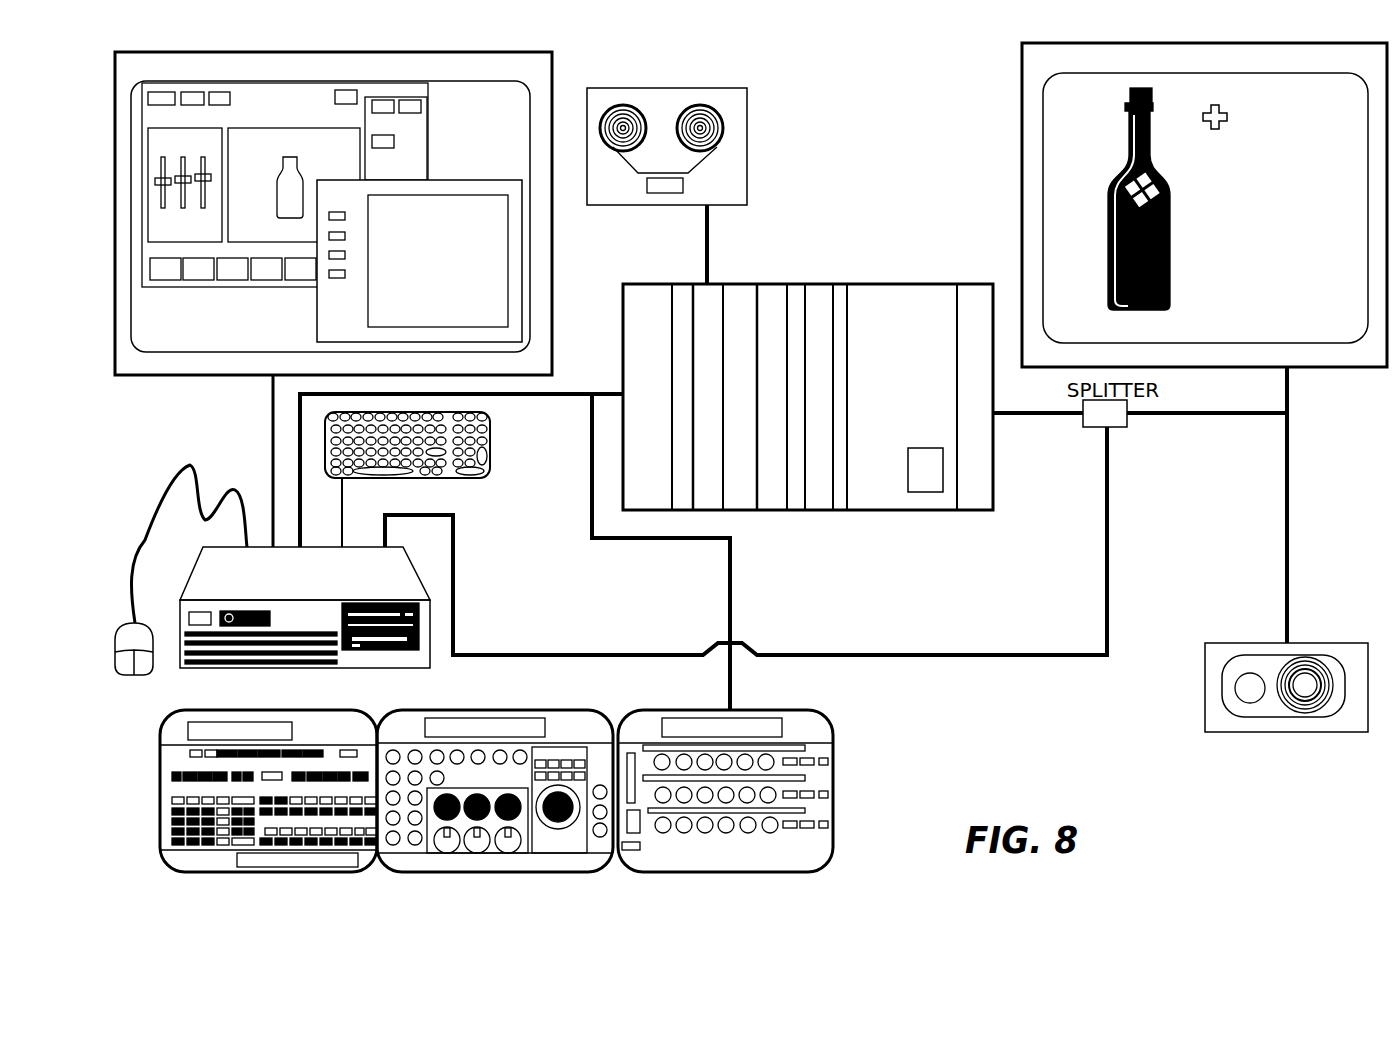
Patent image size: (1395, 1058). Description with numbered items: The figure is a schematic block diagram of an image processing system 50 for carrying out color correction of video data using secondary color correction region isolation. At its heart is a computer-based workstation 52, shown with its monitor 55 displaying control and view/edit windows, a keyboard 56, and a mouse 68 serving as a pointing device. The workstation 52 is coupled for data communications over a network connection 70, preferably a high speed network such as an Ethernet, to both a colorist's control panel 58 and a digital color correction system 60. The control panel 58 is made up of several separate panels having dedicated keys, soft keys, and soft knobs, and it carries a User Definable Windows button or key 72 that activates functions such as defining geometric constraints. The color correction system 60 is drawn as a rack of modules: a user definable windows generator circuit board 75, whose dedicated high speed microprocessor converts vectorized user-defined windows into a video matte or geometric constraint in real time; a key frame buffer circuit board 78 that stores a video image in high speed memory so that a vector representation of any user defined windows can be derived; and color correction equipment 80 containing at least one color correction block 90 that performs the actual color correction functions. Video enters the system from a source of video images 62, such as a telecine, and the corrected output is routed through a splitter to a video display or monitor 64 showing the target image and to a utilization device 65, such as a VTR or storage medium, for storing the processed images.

The image processing system 50 is at (988, 695).
The computer-based workstation 52 is at (311, 582).
The monitor 55 is at (216, 377).
The keyboard 56 is at (490, 433).
The colorist's control panel 58 is at (178, 767).
The digital color correction system 60 is at (834, 426).
The source of video images 62 is at (737, 183).
The video display or monitor 64 is at (1037, 195).
The utilization device 65 is at (1257, 642).
The mouse 68 is at (123, 676).
The network connection 70 is at (732, 612).
The User Definable Windows (UDW) button or key 72 is at (358, 753).
The user definable windows (UDW) generator circuit board 75 is at (777, 290).
The key frame buffer (KFB) circuit board 78 is at (827, 290).
The color correction equipment 80 is at (915, 292).
The color correction block 90 is at (925, 482).